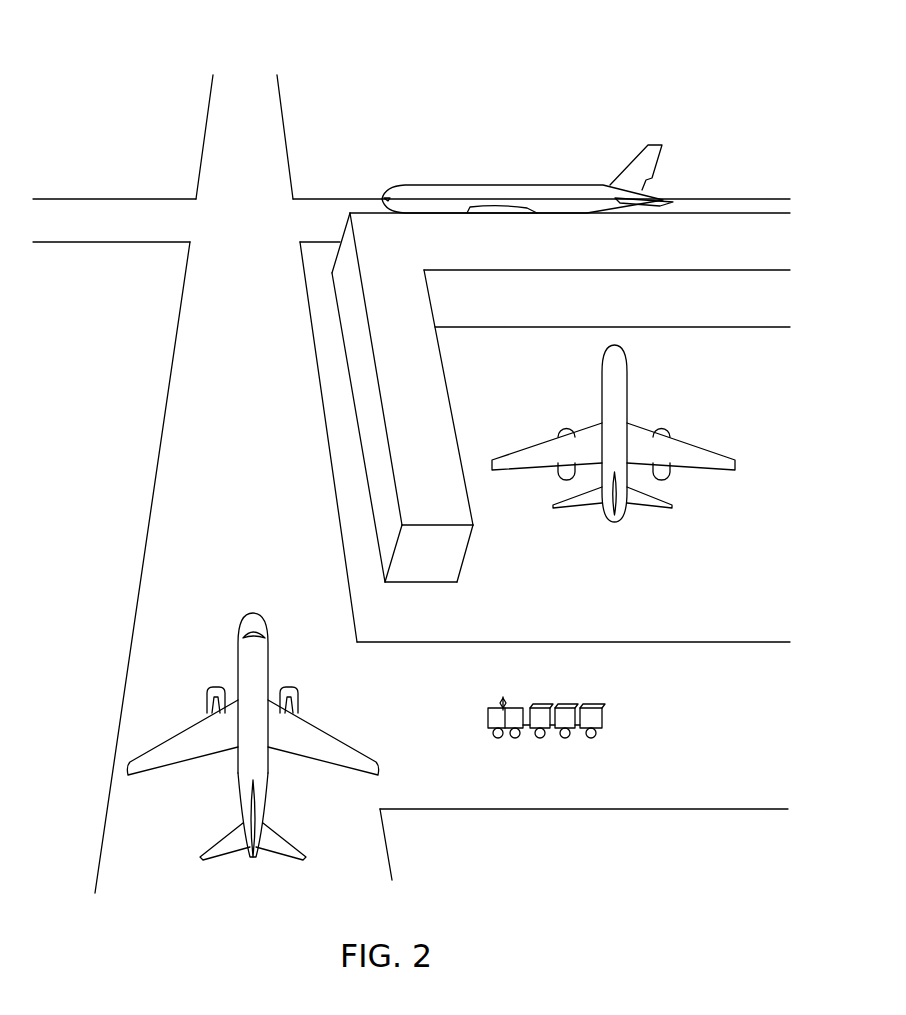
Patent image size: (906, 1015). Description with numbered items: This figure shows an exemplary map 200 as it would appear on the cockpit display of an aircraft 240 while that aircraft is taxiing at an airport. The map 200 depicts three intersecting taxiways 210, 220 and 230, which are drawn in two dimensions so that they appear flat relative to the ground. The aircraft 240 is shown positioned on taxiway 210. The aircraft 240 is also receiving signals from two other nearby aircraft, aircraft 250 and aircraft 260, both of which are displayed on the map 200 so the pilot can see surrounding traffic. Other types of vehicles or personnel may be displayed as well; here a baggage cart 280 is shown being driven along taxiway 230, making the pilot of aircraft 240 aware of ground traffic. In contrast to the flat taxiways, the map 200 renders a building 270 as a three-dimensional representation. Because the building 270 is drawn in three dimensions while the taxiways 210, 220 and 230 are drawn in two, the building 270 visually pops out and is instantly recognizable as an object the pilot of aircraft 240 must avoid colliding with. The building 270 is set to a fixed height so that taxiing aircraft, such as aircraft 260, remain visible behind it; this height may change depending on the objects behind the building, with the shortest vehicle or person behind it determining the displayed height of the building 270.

The map 200 is at (563, 36).
The taxiway 210 is at (130, 658).
The taxiway 220 is at (138, 199).
The taxiway 230 is at (553, 810).
The aircraft 240 is at (270, 668).
The aircraft 250 is at (627, 402).
The aircraft 260 is at (505, 182).
The building 270 is at (445, 377).
The baggage cart 280 is at (542, 705).